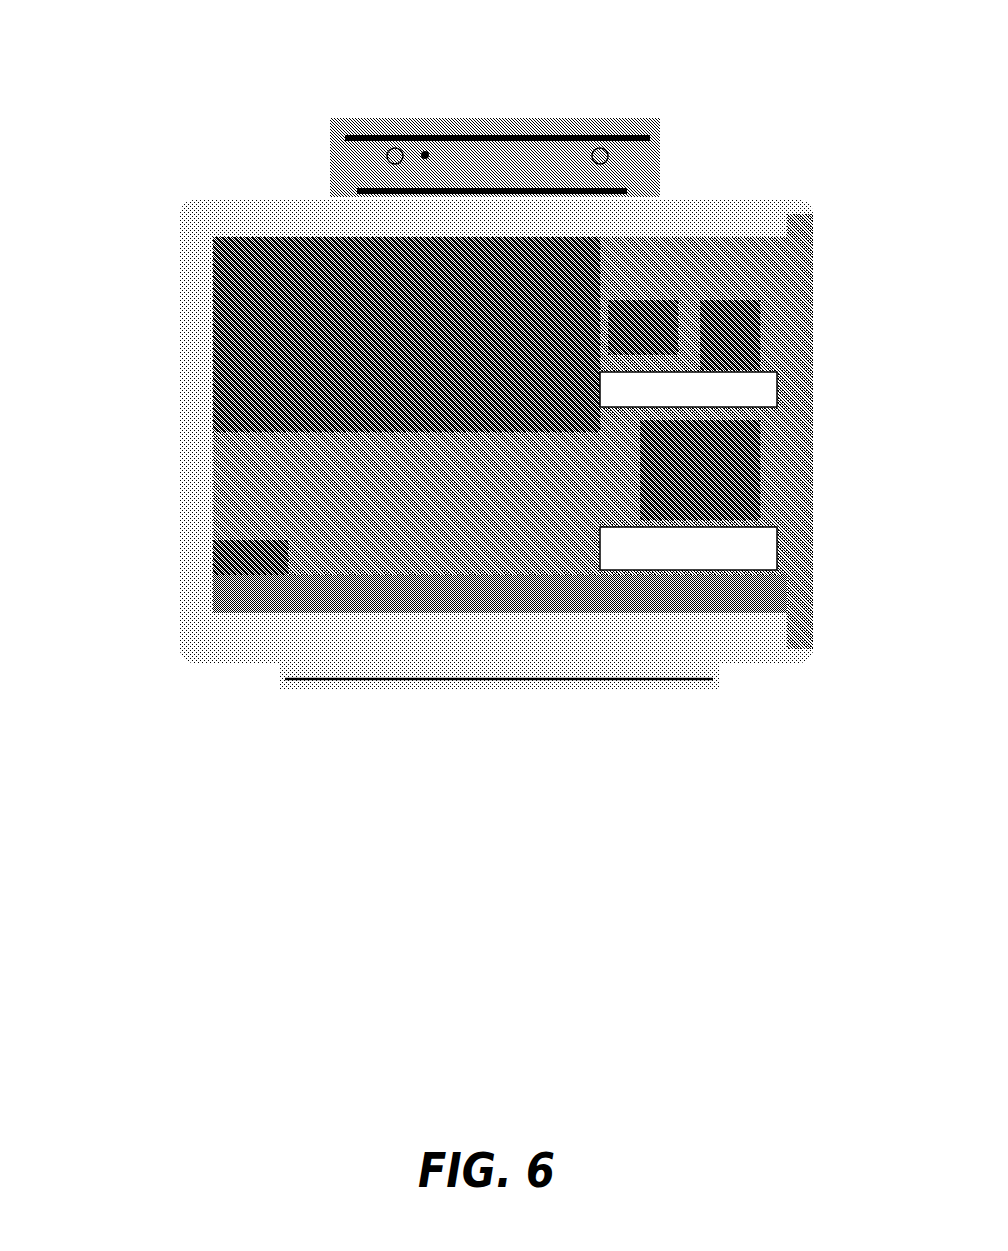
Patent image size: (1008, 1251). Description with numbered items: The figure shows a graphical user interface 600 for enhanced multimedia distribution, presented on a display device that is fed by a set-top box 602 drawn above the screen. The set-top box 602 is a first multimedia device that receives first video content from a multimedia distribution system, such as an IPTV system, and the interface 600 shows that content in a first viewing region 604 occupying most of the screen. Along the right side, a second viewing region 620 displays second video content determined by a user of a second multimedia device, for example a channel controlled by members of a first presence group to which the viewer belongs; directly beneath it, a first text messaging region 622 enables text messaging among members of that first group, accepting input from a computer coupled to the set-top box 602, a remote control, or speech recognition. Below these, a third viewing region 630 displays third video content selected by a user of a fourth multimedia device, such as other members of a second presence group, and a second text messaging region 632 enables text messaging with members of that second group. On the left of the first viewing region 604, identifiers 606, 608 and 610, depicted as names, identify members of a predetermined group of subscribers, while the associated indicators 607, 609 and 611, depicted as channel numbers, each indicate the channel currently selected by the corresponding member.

The graphical user interface 600 is at (320, 219).
The set-top box 602 is at (437, 127).
The first viewing region 604 is at (551, 516).
The identifier 606 is at (198, 453).
The indicator 607 is at (335, 460).
The identifier 608 is at (198, 485).
The indicator 609 is at (339, 493).
The identifier 610 is at (198, 519).
The indicator 611 is at (340, 527).
The second viewing region 620 is at (785, 275).
The first text messaging region 622 is at (711, 401).
The third viewing region 630 is at (790, 449).
The second text messaging region 632 is at (711, 559).